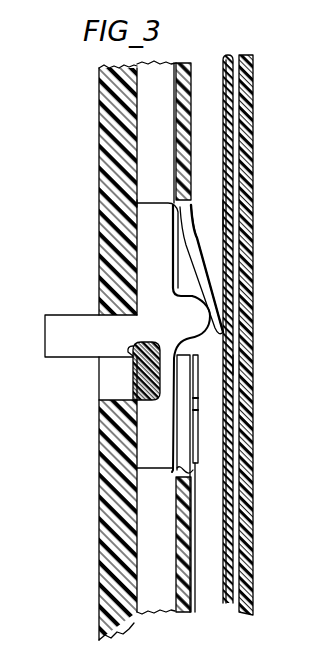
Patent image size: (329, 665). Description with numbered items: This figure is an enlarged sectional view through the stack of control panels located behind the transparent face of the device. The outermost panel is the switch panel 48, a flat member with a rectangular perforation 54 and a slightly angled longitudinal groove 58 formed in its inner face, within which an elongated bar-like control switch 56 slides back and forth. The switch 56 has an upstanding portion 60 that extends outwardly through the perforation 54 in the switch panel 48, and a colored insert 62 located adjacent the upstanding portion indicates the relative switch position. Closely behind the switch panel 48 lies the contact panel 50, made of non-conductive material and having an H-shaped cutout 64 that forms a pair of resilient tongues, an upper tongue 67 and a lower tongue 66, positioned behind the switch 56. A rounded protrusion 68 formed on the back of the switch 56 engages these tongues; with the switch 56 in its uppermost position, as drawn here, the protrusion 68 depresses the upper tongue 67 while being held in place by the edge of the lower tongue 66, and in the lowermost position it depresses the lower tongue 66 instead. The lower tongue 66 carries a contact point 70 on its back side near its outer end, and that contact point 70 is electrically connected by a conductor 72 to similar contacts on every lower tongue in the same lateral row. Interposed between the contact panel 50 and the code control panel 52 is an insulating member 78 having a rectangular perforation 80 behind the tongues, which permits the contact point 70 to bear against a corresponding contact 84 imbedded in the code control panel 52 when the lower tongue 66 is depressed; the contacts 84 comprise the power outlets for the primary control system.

The switch panel 48 is at (110, 580).
The contact panel 50 is at (193, 78).
The code control panel 52 is at (245, 118).
The rectangular perforation 54 is at (108, 387).
The control switch 56 is at (173, 318).
The longitudinal groove 58 is at (150, 161).
The upstanding portion 60 is at (56, 335).
The colored insert 62 is at (133, 368).
The cutout 64 is at (180, 288).
The lower tongue 66 is at (182, 425).
The upper tongue 67 is at (210, 314).
The rounded protrusion 68 is at (213, 338).
The contact point 70 is at (195, 380).
The conductor 72 is at (197, 453).
The insulating member 78 is at (222, 62).
The rectangular perforation 80 is at (227, 215).
The contact 84 is at (233, 366).